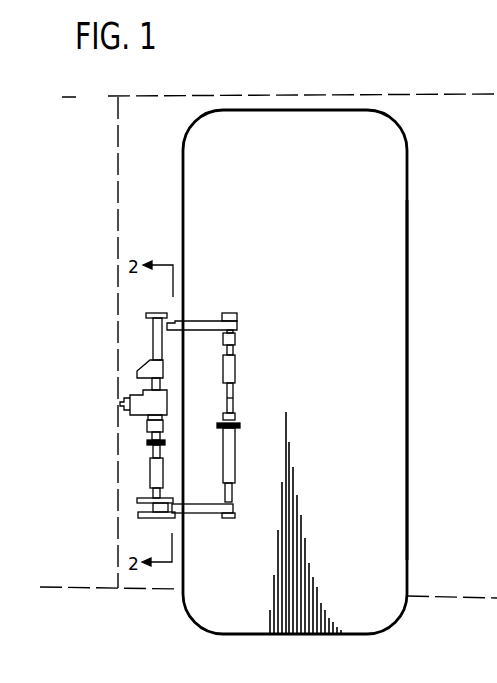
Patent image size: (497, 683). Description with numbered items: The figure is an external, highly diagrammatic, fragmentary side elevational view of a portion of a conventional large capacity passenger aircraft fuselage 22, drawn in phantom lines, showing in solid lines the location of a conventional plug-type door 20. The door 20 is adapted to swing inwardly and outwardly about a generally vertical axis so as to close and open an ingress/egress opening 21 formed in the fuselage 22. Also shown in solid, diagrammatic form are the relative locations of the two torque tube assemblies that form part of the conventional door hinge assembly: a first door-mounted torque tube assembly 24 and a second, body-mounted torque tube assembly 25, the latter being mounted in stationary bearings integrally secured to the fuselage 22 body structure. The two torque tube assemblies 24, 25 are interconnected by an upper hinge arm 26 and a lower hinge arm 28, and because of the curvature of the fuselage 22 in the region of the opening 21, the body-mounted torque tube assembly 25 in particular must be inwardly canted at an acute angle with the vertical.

The plug-type door 20 is at (382, 238).
The ingress/egress opening 21 is at (408, 395).
The fuselage 22 is at (387, 94).
The first door-mounted torque tube assembly 24 is at (238, 410).
The second torque tube assembly 25 is at (135, 453).
The upper hinge arm 26 is at (205, 322).
The lower hinge arm 28 is at (192, 513).